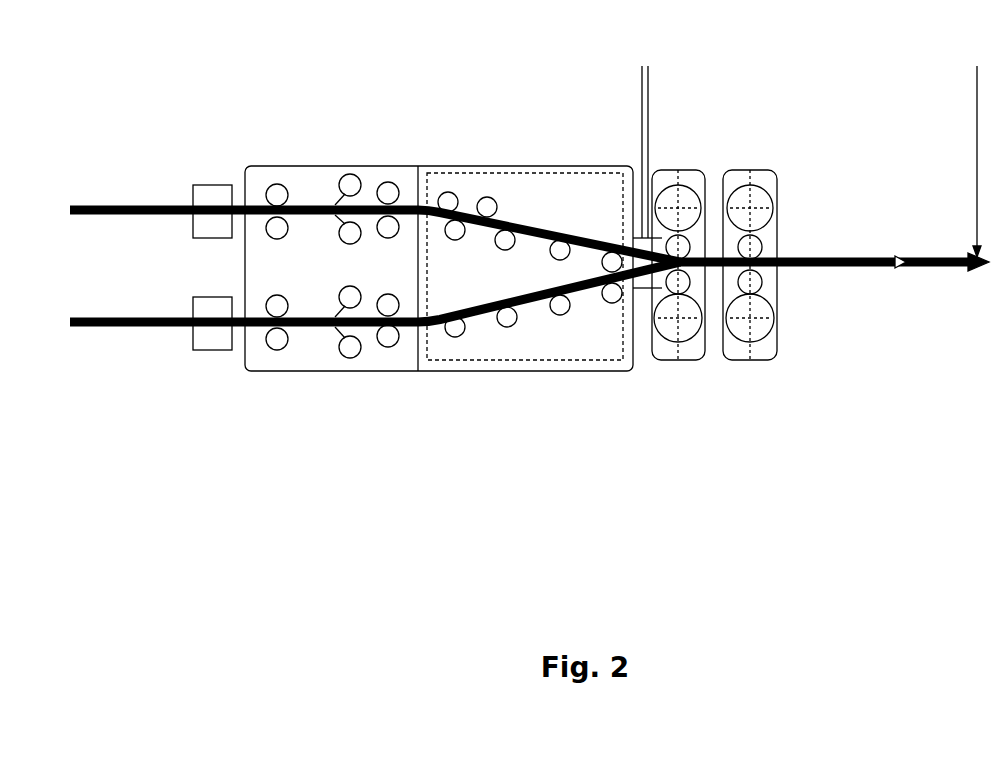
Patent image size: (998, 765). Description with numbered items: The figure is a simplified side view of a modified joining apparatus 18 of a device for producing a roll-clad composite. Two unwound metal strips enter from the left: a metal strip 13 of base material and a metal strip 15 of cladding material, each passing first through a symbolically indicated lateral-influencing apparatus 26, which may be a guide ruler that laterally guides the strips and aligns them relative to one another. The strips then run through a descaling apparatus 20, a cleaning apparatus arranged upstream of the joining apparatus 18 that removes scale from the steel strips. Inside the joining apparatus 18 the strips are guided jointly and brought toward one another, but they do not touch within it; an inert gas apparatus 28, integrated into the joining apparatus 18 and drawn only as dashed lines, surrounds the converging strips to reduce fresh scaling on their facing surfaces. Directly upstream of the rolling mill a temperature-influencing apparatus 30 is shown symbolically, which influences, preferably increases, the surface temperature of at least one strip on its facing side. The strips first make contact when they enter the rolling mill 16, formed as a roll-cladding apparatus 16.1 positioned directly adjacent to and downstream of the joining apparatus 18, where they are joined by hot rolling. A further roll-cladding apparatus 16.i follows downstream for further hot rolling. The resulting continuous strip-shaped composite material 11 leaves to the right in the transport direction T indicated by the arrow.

The strip-shaped composite material 11 is at (864, 256).
The metal strip 13 is at (113, 328).
The metal strip 15 is at (130, 205).
The rolling mill 16 is at (737, 264).
The roll-cladding apparatus 16.1 is at (684, 168).
The further roll-cladding apparatus 16.i is at (754, 168).
The joining apparatus 18 is at (488, 166).
The descaling apparatus 20 is at (325, 166).
The lateral-influencing apparatus 26 is at (210, 185).
The inert gas apparatus 28 is at (573, 166).
The temperature-influencing apparatus 30 is at (646, 164).
The transport direction T is at (977, 148).